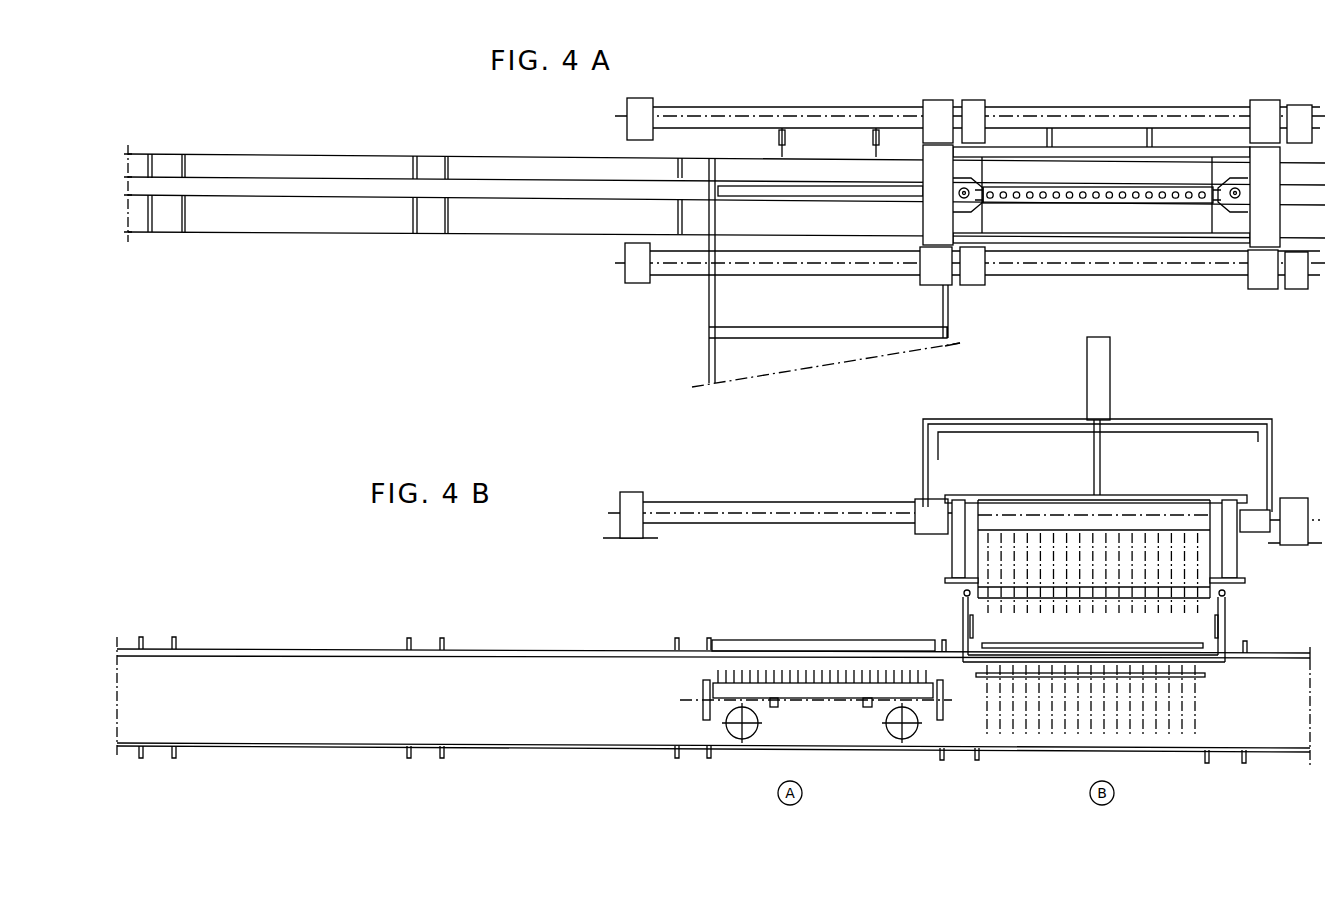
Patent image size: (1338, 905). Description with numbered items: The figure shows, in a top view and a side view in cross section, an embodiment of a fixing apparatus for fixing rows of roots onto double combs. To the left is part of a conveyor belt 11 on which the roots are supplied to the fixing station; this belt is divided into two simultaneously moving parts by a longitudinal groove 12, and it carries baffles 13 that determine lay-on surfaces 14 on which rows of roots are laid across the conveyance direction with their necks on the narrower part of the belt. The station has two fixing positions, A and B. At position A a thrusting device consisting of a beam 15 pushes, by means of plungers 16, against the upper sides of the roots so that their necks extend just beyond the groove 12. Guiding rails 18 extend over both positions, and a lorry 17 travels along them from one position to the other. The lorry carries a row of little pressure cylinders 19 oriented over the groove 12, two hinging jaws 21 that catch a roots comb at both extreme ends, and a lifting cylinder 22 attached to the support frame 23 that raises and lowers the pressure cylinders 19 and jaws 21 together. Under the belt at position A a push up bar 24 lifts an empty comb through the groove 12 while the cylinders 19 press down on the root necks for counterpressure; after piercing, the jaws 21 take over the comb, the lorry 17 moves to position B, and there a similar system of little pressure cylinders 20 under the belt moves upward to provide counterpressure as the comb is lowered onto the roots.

In FIG. 4A, the conveyor belt 11 is at (255, 160).
In FIG. 4A, the groove 12 is at (330, 185).
In FIG. 4A, the baffles 13 is at (185, 154).
In FIG. 4B, the baffles 13 is at (174, 637).
In FIG. 4B, the lay-on surfaces 14 is at (303, 649).
In FIG. 4A, the beam 15 is at (748, 157).
In FIG. 4B, the beam 15 is at (745, 640).
In FIG. 4A, the plungers 16 is at (870, 137).
In FIG. 4A, the lorry 17 is at (1258, 292).
In FIG. 4B, the lorry 17 is at (1167, 418).
In FIG. 4A, the guiding rails 18 is at (790, 118).
In FIG. 4B, the guiding rails 18 is at (752, 502).
In FIG. 4A, the little pressure cylinders 19 is at (1073, 185).
In FIG. 4B, the little pressure cylinders 19 is at (1085, 600).
In FIG. 4B, the little pressure cylinders 20 is at (1088, 678).
In FIG. 4B, the hinging jaws 21 is at (960, 632).
In FIG. 4B, the lifting cylinder 22 is at (1107, 368).
In FIG. 4B, the support frame 23 is at (1205, 425).
In FIG. 4B, the push up bar 24 is at (820, 692).